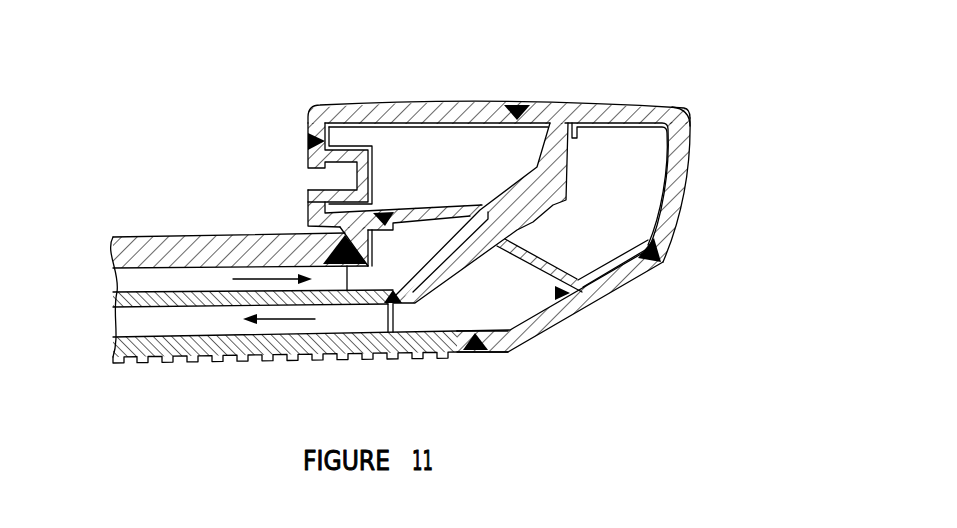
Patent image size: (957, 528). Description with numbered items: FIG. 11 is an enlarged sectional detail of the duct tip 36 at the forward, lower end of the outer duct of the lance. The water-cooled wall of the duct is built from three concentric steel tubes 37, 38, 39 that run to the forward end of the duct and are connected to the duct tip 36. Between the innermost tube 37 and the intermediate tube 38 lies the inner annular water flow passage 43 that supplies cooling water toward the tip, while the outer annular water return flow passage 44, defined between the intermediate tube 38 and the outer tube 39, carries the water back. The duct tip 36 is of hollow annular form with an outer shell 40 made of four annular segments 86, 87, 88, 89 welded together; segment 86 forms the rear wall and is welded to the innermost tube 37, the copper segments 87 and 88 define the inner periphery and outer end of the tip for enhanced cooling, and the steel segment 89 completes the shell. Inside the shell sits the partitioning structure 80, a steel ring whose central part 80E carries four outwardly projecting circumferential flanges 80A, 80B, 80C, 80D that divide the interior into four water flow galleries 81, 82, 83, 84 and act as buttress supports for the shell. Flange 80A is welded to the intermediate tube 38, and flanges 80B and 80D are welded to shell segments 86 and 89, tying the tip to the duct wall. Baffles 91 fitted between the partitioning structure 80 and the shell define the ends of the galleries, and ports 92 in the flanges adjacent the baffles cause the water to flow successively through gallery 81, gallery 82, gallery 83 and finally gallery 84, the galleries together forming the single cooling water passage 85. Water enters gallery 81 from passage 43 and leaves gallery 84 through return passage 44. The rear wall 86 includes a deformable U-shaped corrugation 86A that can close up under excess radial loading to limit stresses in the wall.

The duct tip 36 is at (698, 203).
The innermost tube 37 is at (113, 242).
The intermediate tube 38 is at (115, 298).
The outer tube 39 is at (112, 350).
The outer shell 40 is at (666, 260).
The inner annular water flow passage 43 is at (170, 283).
The outer annular water return flow passage 44 is at (210, 316).
The partitioning structure 80 is at (585, 174).
The first circumferential flange 80A is at (421, 283).
The second circumferential flange 80B is at (453, 207).
The third circumferential flange 80C is at (585, 158).
The fourth circumferential flange 80D is at (528, 266).
The central part of the ring 80E is at (535, 205).
The first water flow gallery 81 is at (404, 262).
The second water flow gallery 82 is at (419, 174).
The third water flow gallery 83 is at (600, 204).
The fourth water flow gallery 84 is at (462, 309).
The cooling water passage 85 is at (613, 275).
The rear wall segment 86 is at (308, 204).
The deformable corrugation 86A is at (313, 176).
The inner periphery shell segment 87 is at (390, 103).
The outer end shell segment 88 is at (690, 108).
The shell segment 89 is at (580, 308).
The baffle 91 is at (380, 263).
The port 92 is at (441, 133).